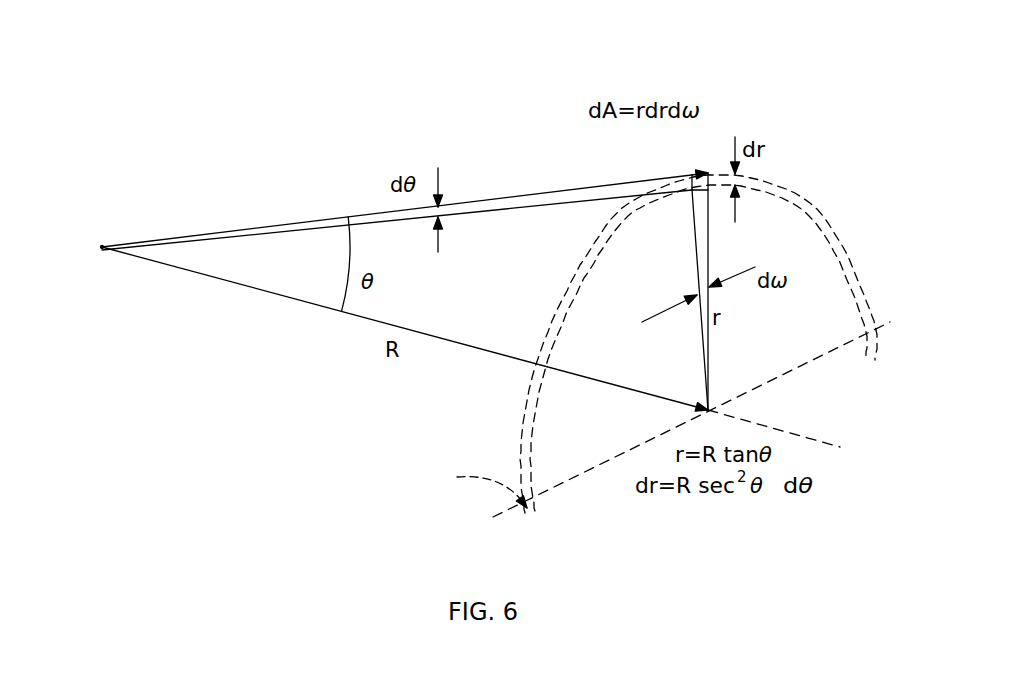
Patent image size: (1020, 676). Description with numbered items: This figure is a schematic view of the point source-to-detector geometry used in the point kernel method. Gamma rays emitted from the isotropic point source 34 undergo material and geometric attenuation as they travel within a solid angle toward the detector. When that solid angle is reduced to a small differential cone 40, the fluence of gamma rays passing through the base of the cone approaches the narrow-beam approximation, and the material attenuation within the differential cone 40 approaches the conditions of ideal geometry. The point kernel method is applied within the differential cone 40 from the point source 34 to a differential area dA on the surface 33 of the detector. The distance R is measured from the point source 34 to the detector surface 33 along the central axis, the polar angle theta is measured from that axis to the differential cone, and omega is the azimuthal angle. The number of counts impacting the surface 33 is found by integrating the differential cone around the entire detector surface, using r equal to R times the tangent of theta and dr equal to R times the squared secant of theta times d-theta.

The point source 34 is at (102, 247).
The differential cone 40 is at (555, 190).
The surface of the detector 33 is at (601, 360).